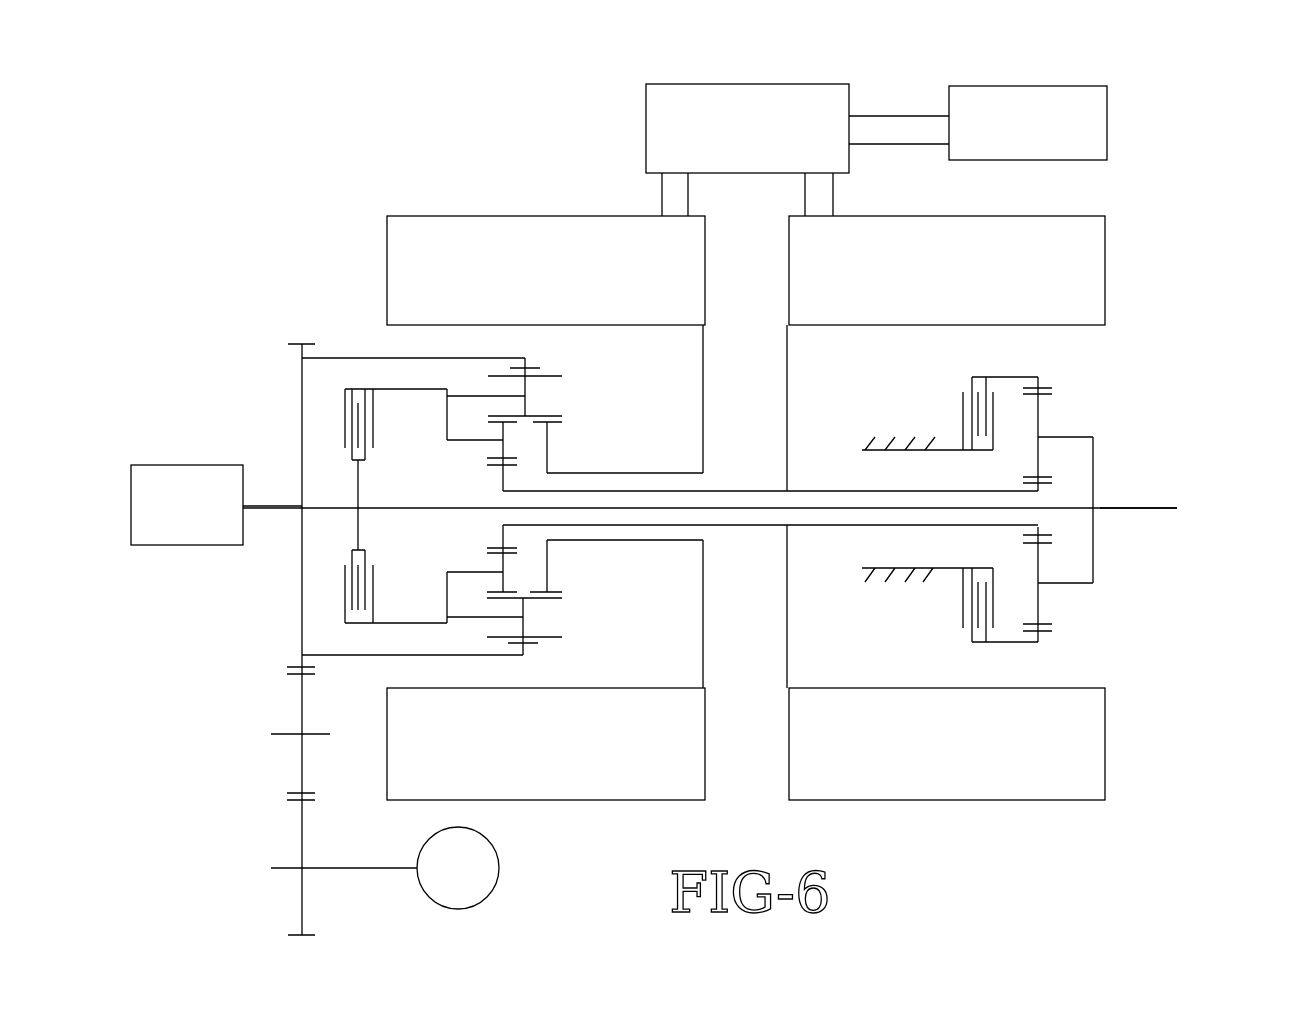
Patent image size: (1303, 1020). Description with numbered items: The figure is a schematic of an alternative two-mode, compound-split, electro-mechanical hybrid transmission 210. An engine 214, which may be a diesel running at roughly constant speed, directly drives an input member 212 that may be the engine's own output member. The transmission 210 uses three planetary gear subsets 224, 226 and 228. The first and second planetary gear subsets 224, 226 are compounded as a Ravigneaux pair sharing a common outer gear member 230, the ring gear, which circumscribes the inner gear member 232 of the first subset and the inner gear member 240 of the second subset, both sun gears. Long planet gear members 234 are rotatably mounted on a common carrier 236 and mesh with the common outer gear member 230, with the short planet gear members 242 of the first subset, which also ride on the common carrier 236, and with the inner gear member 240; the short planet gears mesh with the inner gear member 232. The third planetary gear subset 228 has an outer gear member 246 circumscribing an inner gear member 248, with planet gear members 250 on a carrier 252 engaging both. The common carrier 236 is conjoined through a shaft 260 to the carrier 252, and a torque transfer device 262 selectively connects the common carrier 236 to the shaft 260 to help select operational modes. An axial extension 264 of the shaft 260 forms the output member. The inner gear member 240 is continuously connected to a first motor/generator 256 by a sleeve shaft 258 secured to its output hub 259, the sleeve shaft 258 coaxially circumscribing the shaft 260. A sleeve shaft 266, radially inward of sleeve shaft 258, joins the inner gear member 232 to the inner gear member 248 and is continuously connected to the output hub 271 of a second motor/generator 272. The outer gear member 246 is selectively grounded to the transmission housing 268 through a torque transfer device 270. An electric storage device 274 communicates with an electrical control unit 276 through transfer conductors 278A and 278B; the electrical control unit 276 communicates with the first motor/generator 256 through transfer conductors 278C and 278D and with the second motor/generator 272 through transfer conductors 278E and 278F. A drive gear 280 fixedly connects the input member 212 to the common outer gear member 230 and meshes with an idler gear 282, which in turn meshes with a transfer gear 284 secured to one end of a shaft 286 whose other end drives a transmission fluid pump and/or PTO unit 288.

The hybrid transmission 210 is at (1162, 132).
The input member 212 is at (268, 505).
The engine 214 is at (157, 521).
The first planetary gear subset 224 is at (480, 428).
The second planetary gear subset 226 is at (600, 379).
The third planetary gear subset 228 is at (1077, 410).
The common outer gear member 230 is at (540, 370).
The inner gear member of the first planetary gear subset 232 is at (498, 470).
The long planet gear members 234 is at (540, 416).
The common carrier 236 is at (447, 420).
The inner gear member of the second planetary gear subset 240 is at (554, 424).
The short planet gear members 242 is at (487, 460).
The outer gear member of the third planetary gear subset 246 is at (1047, 388).
The inner gear member of the third planetary gear subset 248 is at (1023, 533).
The planet gear members 250 is at (1037, 460).
The carrier of the third planetary gear subset 252 is at (1095, 470).
The first motor/generator 256 is at (562, 290).
The sleeve shaft 258 is at (661, 474).
The output hub of the first motor/generator 259 is at (705, 454).
The shaft 260 is at (745, 508).
The torque transfer device 262 is at (372, 593).
The axial extension 264 is at (1143, 510).
The sleeve shaft 266 is at (825, 492).
The transmission housing 268 is at (942, 450).
The torque transfer device 270 is at (963, 402).
The output hub of the second motor/generator 271 is at (787, 397).
The second motor/generator 272 is at (974, 296).
The electric storage device 274 is at (1055, 139).
The electrical control unit 276 is at (773, 144).
The transfer conductor 278A is at (878, 115).
The transfer conductor 278B is at (918, 146).
The transfer conductor 278C is at (662, 187).
The transfer conductor 278D is at (690, 198).
The transfer conductor 278E is at (805, 205).
The transfer conductor 278F is at (833, 188).
The drive gear 280 is at (302, 402).
The idler gear 282 is at (301, 712).
The transfer gear 284 is at (301, 910).
The shaft 286 is at (363, 868).
The transmission fluid pump and/or PTO unit 288 is at (468, 862).